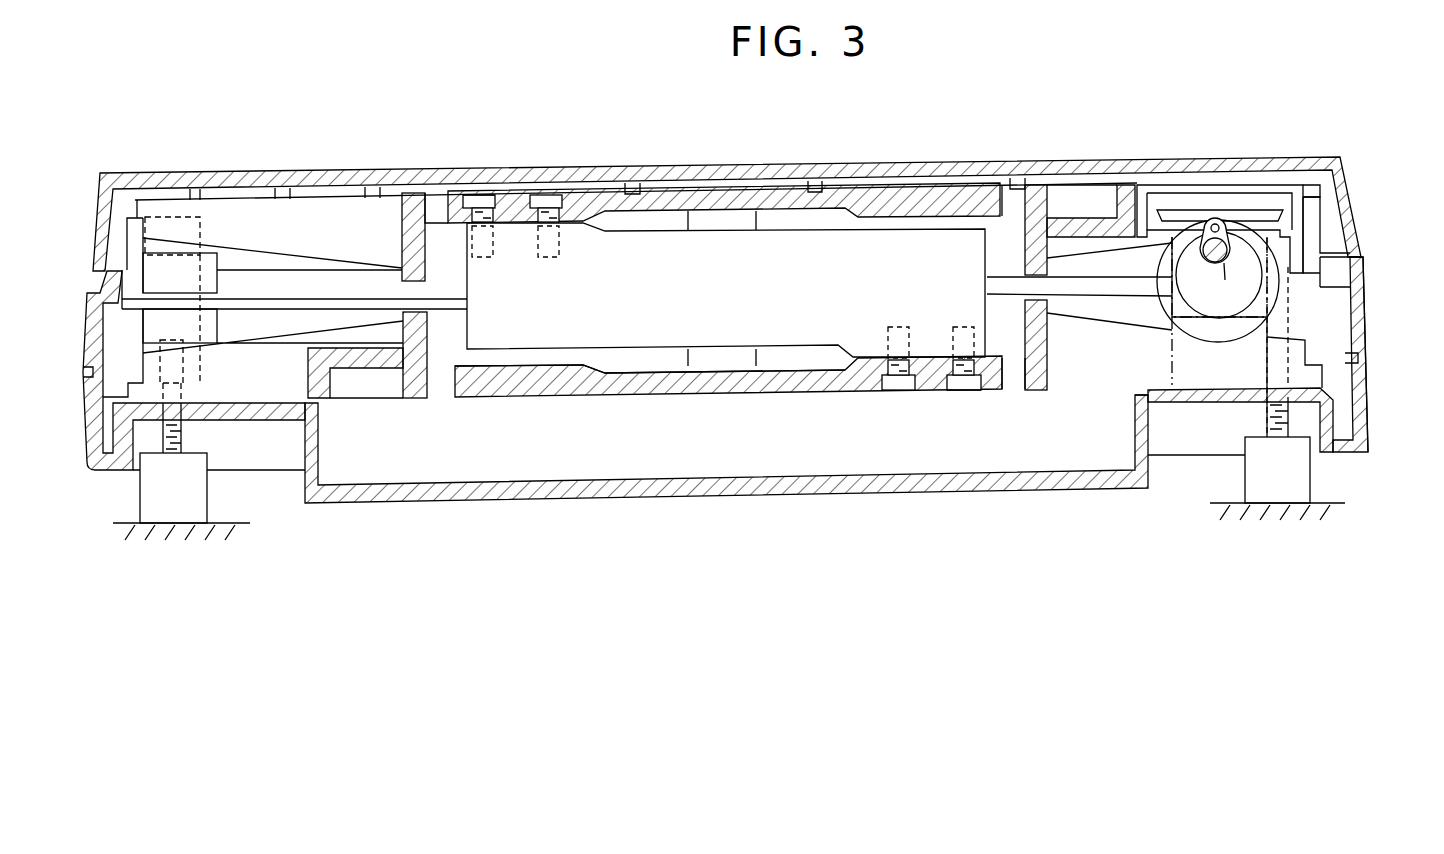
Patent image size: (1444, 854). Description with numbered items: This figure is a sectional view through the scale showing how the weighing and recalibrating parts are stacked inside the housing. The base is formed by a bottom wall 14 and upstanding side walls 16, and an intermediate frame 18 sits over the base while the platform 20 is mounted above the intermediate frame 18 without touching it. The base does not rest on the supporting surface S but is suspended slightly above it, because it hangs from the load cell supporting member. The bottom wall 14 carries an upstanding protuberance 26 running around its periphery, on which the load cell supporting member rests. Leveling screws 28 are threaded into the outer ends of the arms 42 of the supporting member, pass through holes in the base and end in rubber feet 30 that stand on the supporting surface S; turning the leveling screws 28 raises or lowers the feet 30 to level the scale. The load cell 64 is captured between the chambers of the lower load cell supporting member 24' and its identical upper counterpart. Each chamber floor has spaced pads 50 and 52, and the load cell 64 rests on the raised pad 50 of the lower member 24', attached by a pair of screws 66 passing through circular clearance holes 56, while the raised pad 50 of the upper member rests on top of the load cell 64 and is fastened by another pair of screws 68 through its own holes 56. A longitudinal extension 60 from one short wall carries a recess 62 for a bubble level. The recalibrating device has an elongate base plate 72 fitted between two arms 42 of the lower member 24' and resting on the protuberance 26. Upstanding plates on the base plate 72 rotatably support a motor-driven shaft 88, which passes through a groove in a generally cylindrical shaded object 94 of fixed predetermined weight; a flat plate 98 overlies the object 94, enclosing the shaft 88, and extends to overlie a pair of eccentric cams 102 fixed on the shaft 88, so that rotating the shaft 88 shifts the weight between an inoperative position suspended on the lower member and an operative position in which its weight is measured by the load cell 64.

The bottom wall 14 is at (645, 481).
The side walls 16 is at (1369, 415).
The intermediate frame 18 is at (1366, 321).
The platform 20 is at (935, 163).
The lower load cell supporting member 24' is at (1105, 420).
The upstanding protuberance 26 is at (265, 471).
The leveling screws 28 is at (186, 432).
The rubber feet 30 is at (152, 489).
The arms 42 is at (302, 208).
The pad 50 is at (519, 226).
The pad 52 is at (536, 364).
The circular clearance holes 56 is at (467, 197).
The longitudinal extension 60 is at (1150, 188).
The recess 62 is at (1053, 191).
The load cell 64 is at (703, 299).
The screws 66 is at (956, 393).
The screws 68 is at (493, 199).
The base plate 72 is at (1306, 241).
The shaft 88 is at (1219, 275).
The cylindrical shaded object 94 is at (1282, 304).
The flat plate 98 is at (1259, 209).
The eccentric cams 102 is at (1200, 241).
The supporting surface S is at (181, 525).